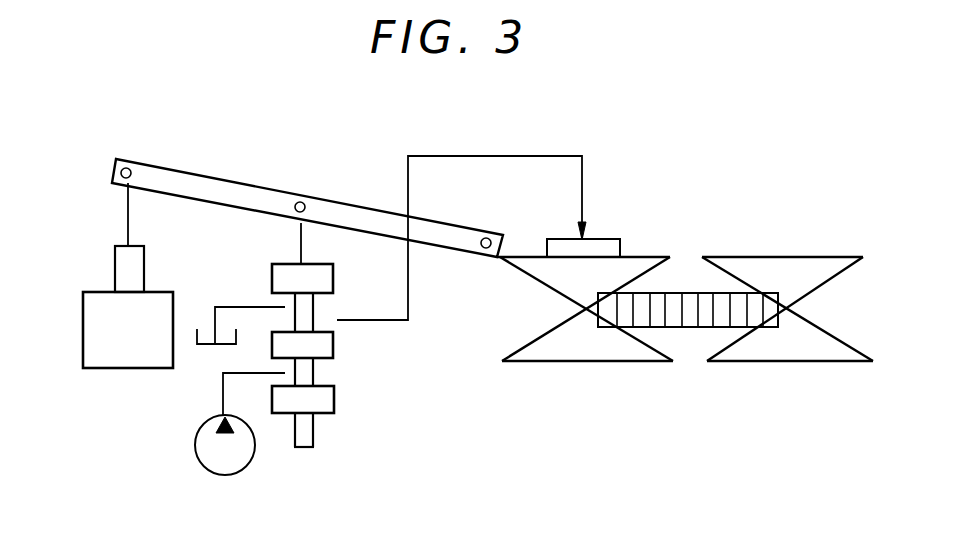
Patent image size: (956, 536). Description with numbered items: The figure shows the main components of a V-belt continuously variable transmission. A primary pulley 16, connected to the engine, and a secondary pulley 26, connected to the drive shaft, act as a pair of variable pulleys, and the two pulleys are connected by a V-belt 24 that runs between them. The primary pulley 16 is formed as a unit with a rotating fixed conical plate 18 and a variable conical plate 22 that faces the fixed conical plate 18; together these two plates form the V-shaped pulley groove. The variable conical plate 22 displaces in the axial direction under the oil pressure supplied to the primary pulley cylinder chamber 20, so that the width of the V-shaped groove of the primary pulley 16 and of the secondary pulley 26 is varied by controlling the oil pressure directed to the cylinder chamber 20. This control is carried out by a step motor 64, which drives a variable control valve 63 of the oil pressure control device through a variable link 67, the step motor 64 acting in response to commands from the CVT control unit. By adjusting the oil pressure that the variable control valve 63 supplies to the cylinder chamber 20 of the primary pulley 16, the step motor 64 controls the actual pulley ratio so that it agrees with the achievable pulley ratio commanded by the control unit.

The primary pulley 16 is at (595, 370).
The fixed conical plate 18 is at (520, 348).
The primary pulley cylinder chamber 20 is at (622, 241).
The variable conical plate 22 is at (517, 279).
The V-belt 24 is at (695, 318).
The secondary pulley 26 is at (784, 370).
The variable control valve 63 is at (305, 438).
The step motor 64 is at (90, 337).
The variable link 67 is at (228, 185).